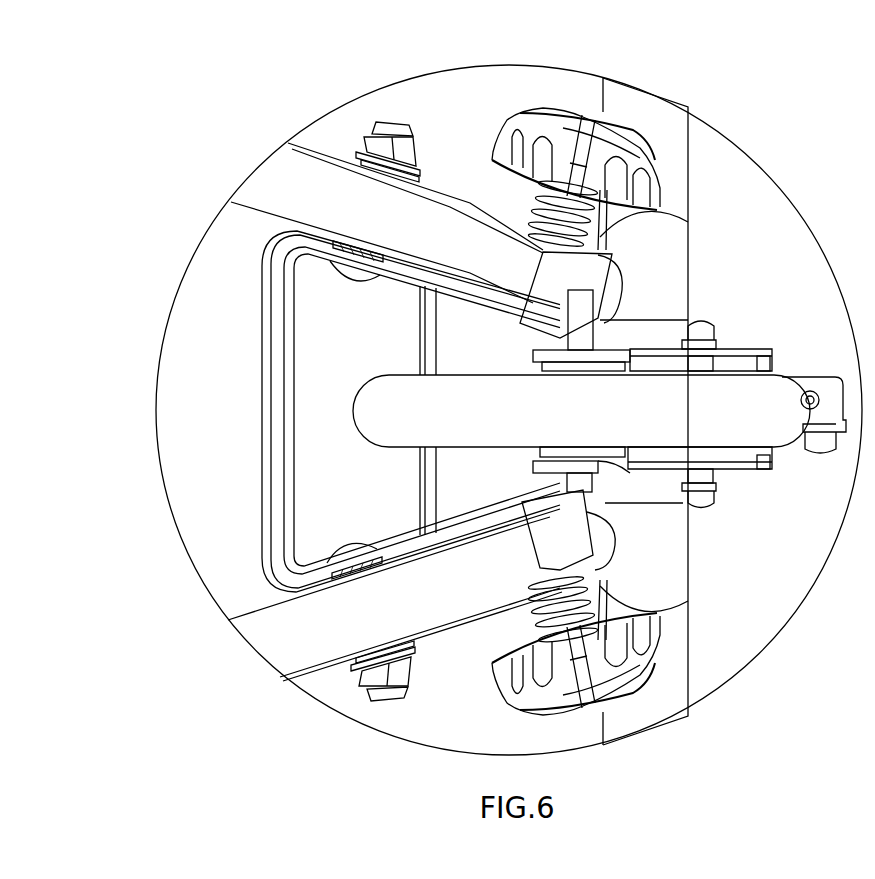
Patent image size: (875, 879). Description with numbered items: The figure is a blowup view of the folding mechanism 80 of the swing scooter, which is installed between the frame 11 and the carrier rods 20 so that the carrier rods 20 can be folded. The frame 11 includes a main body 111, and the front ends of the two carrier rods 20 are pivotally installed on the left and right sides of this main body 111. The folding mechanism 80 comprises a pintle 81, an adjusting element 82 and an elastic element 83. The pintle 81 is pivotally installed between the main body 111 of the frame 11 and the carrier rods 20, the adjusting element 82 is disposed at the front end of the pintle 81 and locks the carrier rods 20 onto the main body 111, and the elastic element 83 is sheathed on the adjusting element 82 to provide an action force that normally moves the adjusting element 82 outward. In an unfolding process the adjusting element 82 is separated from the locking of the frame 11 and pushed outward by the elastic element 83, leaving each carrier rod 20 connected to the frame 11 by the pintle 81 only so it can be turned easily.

The frame 11 is at (322, 411).
The main body 111 is at (268, 410).
The carrier rod 20 is at (267, 190).
The folding mechanism 80 is at (562, 402).
The pintle 81 is at (377, 148).
The adjusting element 82 is at (637, 172).
The elastic element 83 is at (597, 226).